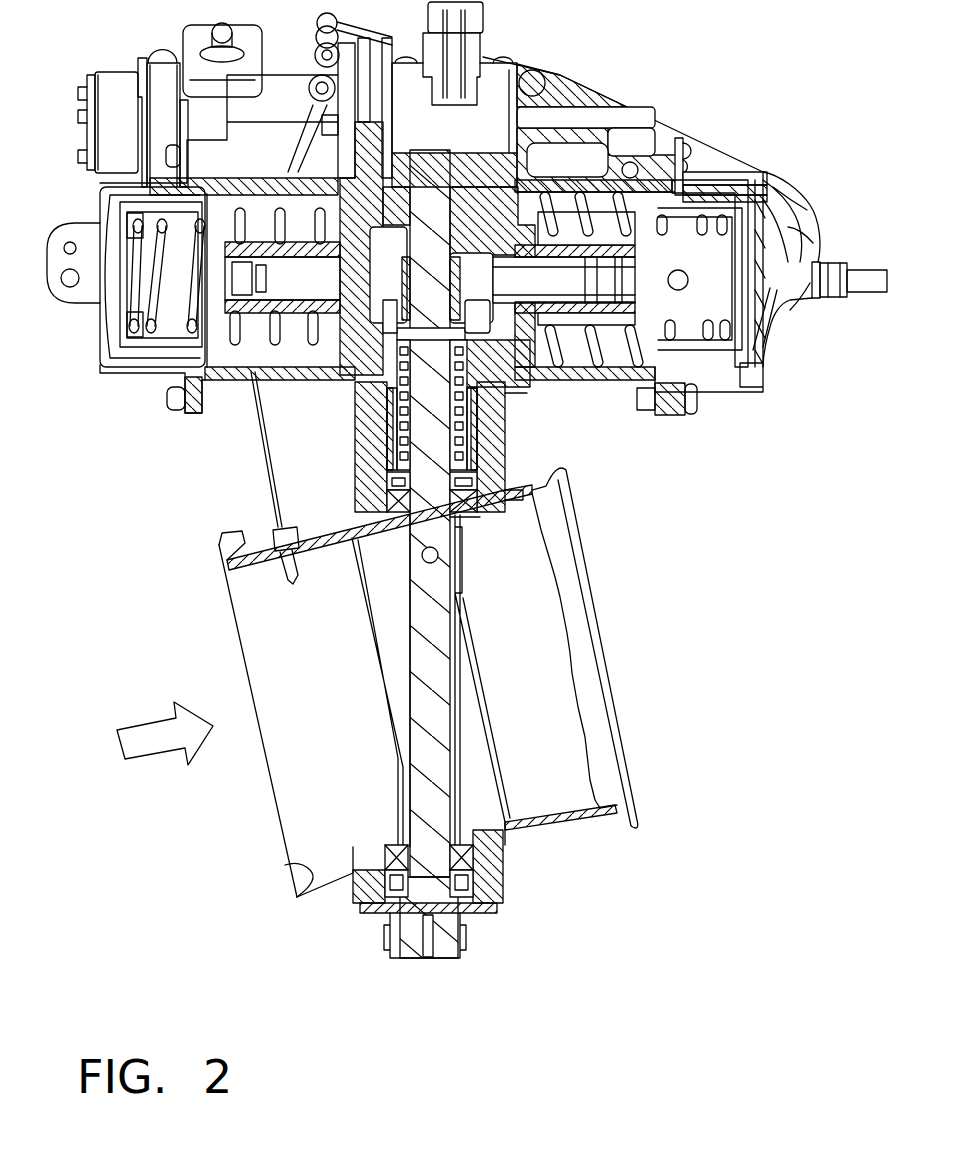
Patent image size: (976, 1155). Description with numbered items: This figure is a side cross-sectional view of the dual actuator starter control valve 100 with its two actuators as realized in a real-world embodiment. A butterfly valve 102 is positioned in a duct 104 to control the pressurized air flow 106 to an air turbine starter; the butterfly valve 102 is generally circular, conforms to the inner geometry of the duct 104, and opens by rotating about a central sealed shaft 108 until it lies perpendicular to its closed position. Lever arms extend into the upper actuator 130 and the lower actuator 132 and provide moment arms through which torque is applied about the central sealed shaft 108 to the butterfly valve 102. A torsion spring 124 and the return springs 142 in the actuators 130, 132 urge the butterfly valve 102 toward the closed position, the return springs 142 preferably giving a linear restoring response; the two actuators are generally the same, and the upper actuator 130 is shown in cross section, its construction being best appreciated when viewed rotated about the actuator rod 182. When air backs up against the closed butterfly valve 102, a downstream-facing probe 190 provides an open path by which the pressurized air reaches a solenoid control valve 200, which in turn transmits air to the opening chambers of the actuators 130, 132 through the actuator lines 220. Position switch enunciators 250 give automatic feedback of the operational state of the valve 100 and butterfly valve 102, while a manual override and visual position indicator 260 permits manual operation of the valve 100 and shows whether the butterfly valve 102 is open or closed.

The dual actuator starter control valve 100 is at (645, 534).
The butterfly valve 102 is at (408, 813).
The duct 104 is at (557, 818).
The pressurized air flow 106 is at (150, 722).
The central sealed shaft 108 is at (435, 690).
The torsion spring 124 is at (473, 424).
The upper actuator 130 is at (793, 161).
The lower actuator 132 is at (160, 448).
The return springs 142 is at (592, 213).
The actuator rod 182 is at (572, 280).
The downstream-facing probe 190 is at (290, 578).
The solenoid control valve 200 is at (125, 70).
The actuator lines 220 is at (513, 40).
The position switch enunciators 250 is at (458, 147).
The manual override and visual position indicator 260 is at (457, 952).